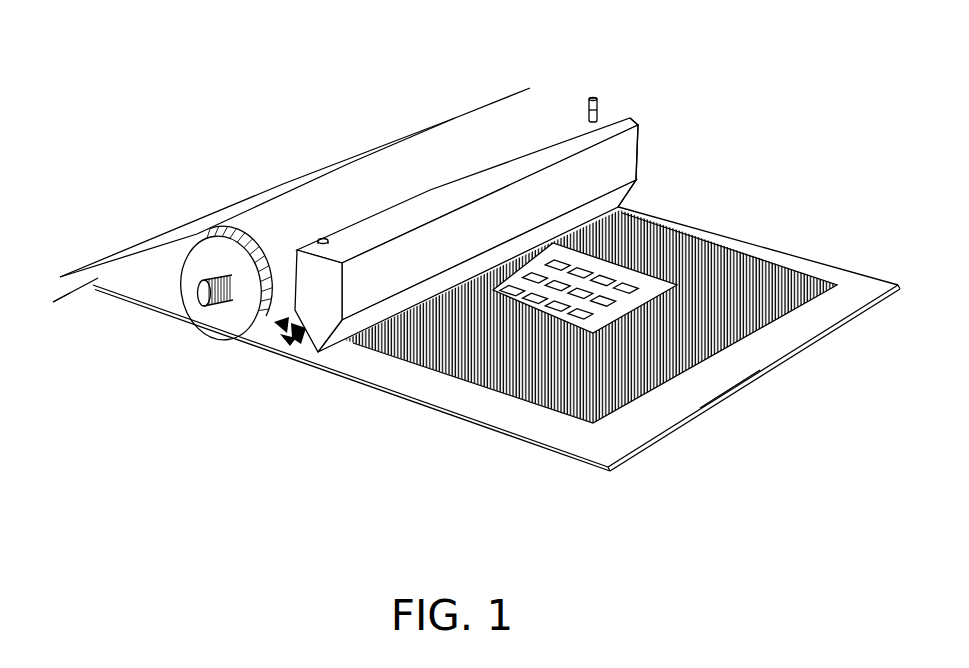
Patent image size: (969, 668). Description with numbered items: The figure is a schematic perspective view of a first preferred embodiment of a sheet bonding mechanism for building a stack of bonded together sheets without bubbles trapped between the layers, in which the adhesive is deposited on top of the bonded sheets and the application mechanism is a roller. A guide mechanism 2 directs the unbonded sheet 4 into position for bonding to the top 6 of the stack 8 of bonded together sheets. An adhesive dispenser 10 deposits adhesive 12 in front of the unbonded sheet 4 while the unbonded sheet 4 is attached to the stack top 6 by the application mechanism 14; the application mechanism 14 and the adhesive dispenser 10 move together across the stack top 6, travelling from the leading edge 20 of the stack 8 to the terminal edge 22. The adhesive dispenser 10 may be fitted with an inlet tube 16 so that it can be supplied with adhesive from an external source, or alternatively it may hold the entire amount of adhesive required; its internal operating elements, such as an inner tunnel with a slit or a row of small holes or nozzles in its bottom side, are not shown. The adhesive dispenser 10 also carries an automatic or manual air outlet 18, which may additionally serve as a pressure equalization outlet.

The guide mechanism 2 is at (540, 86).
The unbonded sheet 4 is at (150, 241).
The top of the stack 6 is at (662, 370).
The stack 8 is at (531, 441).
The adhesive dispenser 10 is at (631, 118).
The adhesive 12 is at (290, 337).
The application mechanism 14 is at (218, 323).
The inlet tube 16 is at (596, 99).
The air outlet 18 is at (324, 241).
The leading edge 20 is at (57, 306).
The terminal edge 22 is at (693, 417).